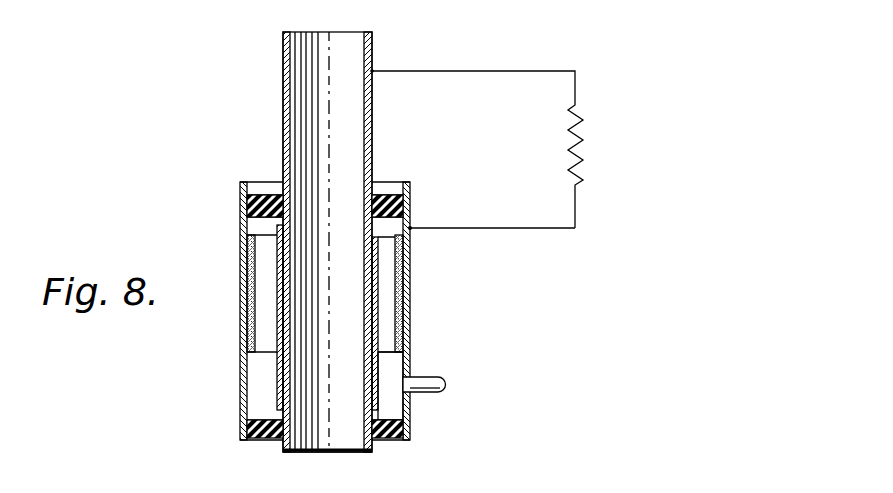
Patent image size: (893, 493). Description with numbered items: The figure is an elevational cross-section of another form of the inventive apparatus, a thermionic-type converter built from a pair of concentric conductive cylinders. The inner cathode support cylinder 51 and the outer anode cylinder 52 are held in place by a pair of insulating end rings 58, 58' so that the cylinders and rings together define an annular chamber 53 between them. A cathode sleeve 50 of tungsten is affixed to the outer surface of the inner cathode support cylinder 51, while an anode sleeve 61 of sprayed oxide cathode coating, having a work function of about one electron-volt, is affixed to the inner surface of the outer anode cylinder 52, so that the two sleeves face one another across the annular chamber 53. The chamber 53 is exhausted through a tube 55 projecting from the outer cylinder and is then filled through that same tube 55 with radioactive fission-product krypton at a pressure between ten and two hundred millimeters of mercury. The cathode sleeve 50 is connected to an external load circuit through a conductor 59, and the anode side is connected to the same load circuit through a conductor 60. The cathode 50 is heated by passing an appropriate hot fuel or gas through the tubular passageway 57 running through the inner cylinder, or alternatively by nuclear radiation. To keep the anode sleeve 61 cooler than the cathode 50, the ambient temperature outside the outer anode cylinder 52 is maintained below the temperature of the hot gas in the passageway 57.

The cathode sleeve 50 is at (277, 375).
The inner cathode support cylinder 51 is at (283, 71).
The outer anode cylinder 52 is at (410, 272).
The annular chamber 53 is at (392, 404).
The tube 55 is at (428, 378).
The tubular passageway 57 is at (343, 433).
The insulating end ring 58 is at (328, 183).
The insulating end ring 58' is at (312, 453).
The conductor 59 is at (436, 70).
The conductor 60 is at (470, 227).
The anode sleeve 61 is at (401, 310).